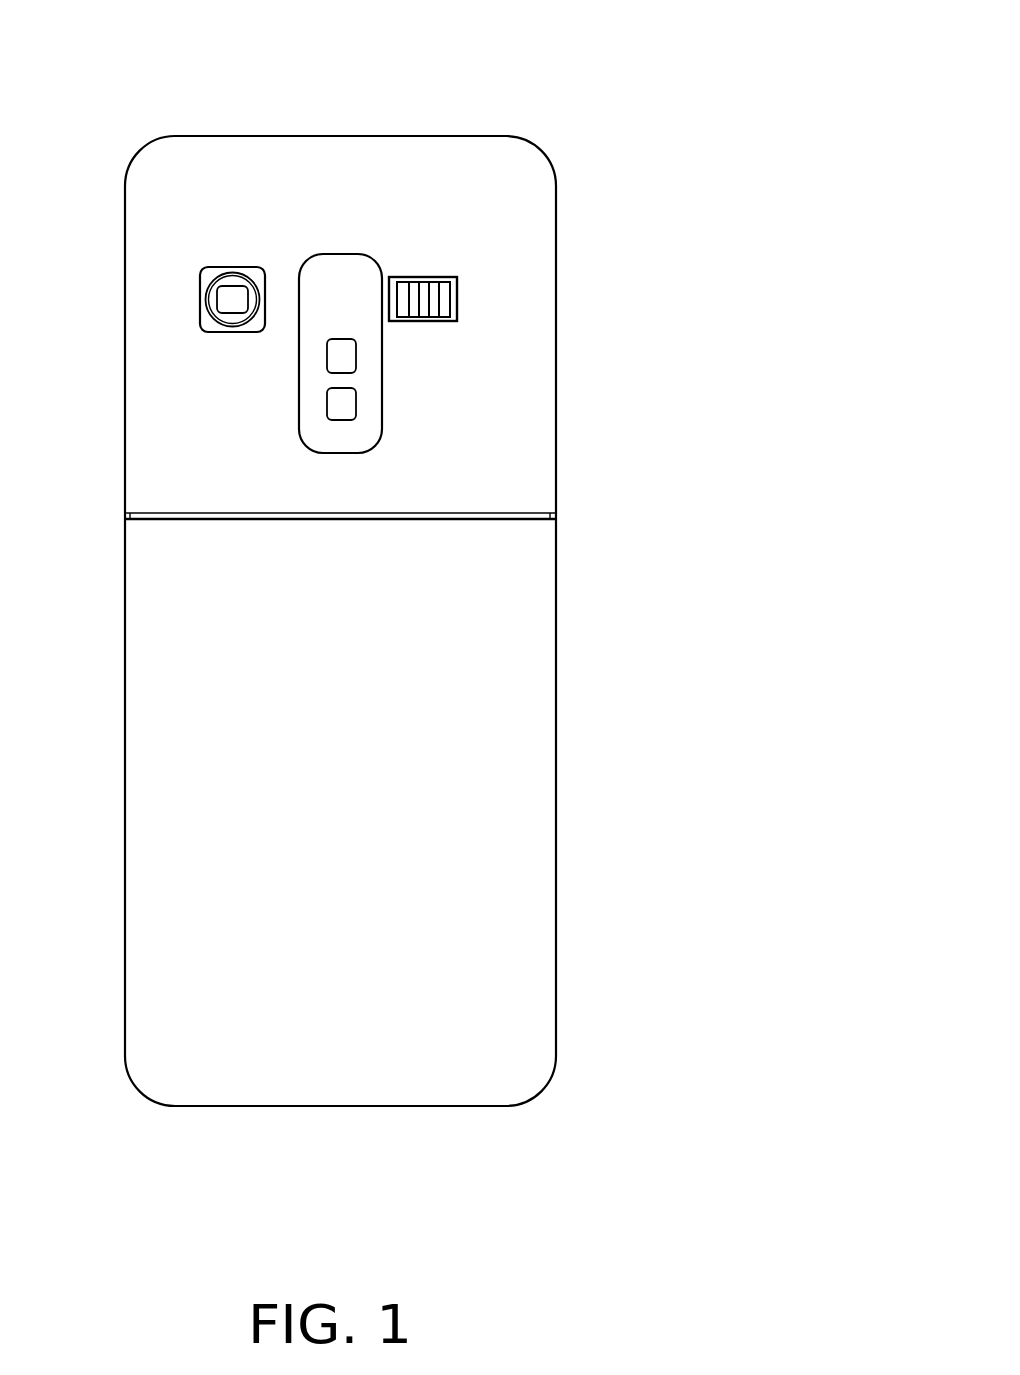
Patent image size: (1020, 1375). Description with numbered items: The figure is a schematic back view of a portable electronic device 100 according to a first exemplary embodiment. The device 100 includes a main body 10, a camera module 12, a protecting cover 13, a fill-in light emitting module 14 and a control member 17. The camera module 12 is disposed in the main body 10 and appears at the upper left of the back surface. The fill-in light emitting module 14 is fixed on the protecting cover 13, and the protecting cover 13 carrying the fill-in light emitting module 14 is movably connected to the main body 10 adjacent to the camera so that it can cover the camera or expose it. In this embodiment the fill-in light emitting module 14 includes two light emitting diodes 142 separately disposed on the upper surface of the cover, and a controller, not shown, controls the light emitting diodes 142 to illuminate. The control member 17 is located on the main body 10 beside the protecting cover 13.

The portable electronic device 100 is at (549, 70).
The main body 10 is at (503, 192).
The camera module 12 is at (228, 293).
The protecting cover 13 is at (340, 280).
The fill-in light emitting module 14 is at (507, 396).
The light emitting diodes 142 is at (345, 357).
The control member 17 is at (442, 300).